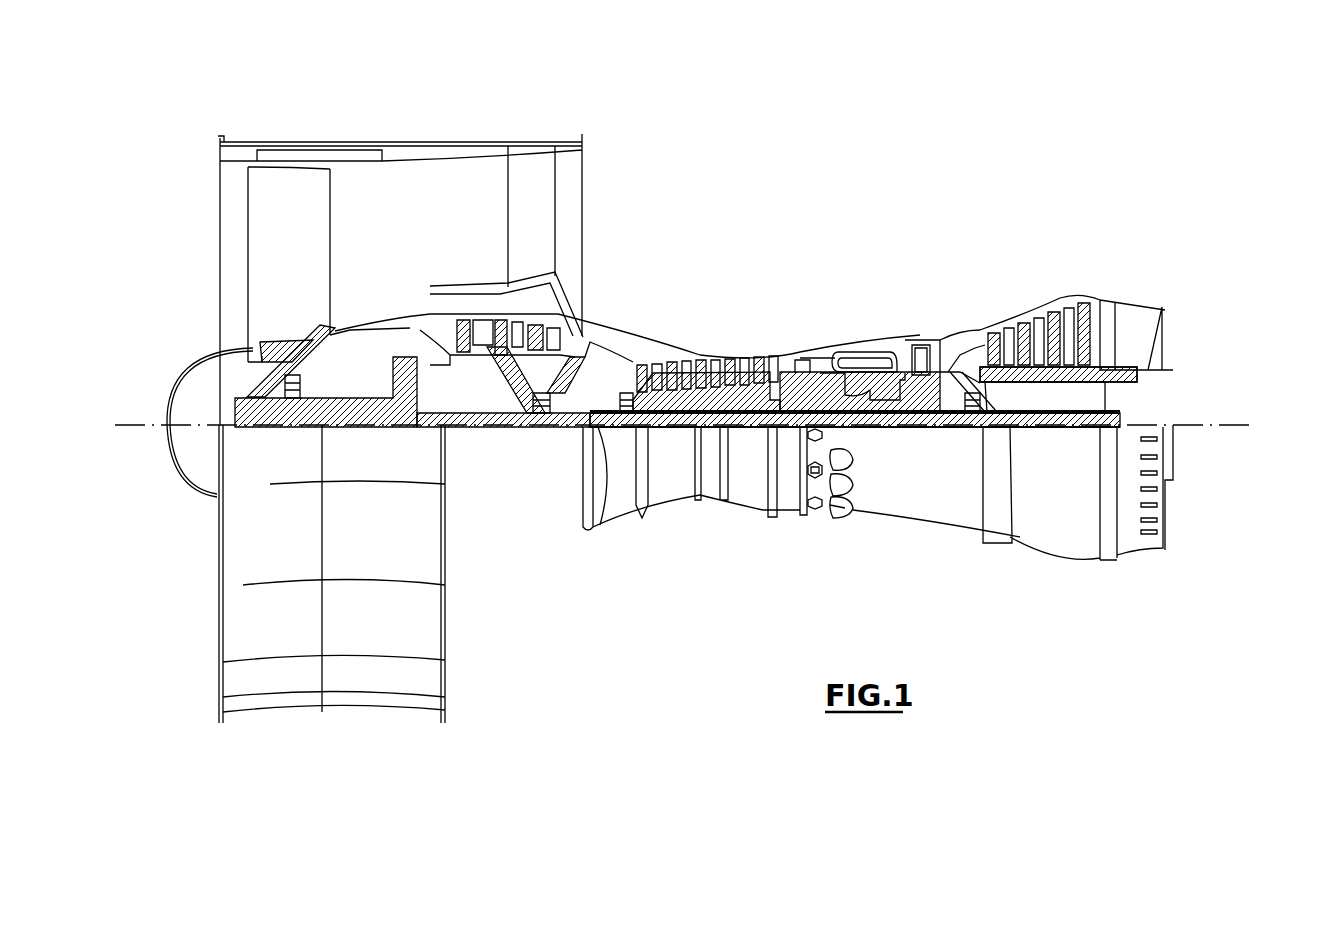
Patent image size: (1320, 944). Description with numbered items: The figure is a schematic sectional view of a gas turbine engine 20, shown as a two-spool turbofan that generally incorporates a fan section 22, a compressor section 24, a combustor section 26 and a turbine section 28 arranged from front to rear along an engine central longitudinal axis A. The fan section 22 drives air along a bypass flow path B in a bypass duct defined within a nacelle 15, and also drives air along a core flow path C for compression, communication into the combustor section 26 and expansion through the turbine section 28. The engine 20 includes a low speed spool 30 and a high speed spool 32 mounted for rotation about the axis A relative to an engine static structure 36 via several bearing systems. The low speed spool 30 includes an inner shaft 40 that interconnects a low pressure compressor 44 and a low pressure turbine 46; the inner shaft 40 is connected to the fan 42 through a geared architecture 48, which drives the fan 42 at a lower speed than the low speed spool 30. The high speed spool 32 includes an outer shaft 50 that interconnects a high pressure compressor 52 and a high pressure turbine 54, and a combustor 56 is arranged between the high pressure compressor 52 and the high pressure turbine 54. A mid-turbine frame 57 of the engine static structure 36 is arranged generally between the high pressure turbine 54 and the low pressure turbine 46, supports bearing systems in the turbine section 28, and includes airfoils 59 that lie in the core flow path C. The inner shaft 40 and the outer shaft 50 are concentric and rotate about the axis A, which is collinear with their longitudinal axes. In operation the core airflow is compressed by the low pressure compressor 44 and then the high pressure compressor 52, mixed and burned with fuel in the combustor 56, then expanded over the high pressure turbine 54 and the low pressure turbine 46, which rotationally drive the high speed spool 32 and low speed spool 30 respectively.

The nacelle 15 is at (403, 145).
The gas turbine engine 20 is at (866, 187).
The fan section 22 is at (332, 132).
The compressor section 24 is at (635, 330).
The combustor section 26 is at (855, 322).
The turbine section 28 is at (1003, 284).
The low speed spool 30 is at (740, 430).
The high speed spool 32 is at (778, 393).
The engine static structure 36 is at (781, 512).
The inner shaft 40 is at (600, 428).
The fan 42 is at (306, 270).
The low pressure compressor 44 is at (490, 347).
The low pressure turbine 46 is at (1050, 318).
The geared architecture 48 is at (410, 405).
The outer shaft 50 is at (864, 414).
The high pressure compressor 52 is at (716, 390).
The high pressure turbine 54 is at (921, 343).
The combustor 56 is at (857, 367).
The mid-turbine frame 57 is at (965, 333).
The airfoils 59 is at (990, 395).
The engine central longitudinal axis A is at (1236, 425).
The bypass flow path B is at (368, 215).
The core flow path C is at (400, 322).